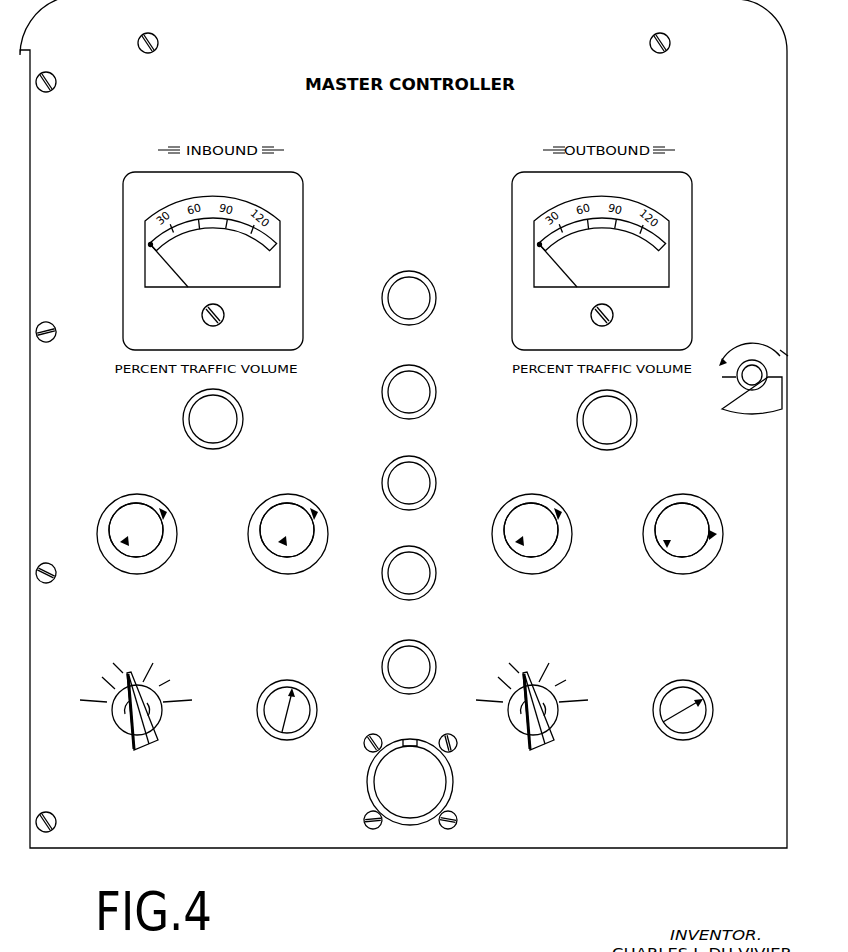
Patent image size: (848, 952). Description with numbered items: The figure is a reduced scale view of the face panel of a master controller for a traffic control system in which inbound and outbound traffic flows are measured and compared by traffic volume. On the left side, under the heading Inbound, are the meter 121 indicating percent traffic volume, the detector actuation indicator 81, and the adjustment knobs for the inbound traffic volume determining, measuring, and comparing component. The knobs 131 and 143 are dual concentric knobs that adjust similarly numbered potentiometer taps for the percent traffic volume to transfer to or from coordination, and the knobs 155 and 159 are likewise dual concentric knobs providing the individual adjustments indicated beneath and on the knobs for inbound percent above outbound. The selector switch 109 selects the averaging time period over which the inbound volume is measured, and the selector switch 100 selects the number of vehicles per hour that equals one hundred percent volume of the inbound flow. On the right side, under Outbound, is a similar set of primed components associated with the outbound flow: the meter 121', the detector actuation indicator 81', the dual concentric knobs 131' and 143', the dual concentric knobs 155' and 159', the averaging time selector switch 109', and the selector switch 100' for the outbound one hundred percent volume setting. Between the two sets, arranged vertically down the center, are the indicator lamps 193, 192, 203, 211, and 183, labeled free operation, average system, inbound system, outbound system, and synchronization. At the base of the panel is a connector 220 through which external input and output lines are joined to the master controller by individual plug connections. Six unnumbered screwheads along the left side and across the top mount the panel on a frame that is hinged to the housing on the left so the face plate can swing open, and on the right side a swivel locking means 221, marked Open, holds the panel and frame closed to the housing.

The meter 121 is at (188, 261).
The meter 121' is at (623, 261).
The indicator lamp 193 is at (383, 311).
The indicator lamp 192 is at (382, 400).
The indicator lamp 203 is at (383, 478).
The indicator lamp 211 is at (383, 562).
The indicator lamp 183 is at (436, 681).
The connector 220 is at (453, 778).
The detector actuation indicator 81 is at (206, 427).
The detector actuation indicator 81' is at (608, 427).
The knob 131 is at (135, 552).
The knob 143 is at (110, 534).
The knob 155 is at (290, 546).
The knob 159 is at (264, 533).
The knob 131' is at (532, 552).
The knob 143' is at (505, 530).
The knob 155' is at (688, 559).
The knob 159' is at (667, 514).
The selector switch 109 is at (132, 719).
The selector switch 109' is at (530, 719).
The selector switch 100 is at (285, 733).
The selector switch 100' is at (678, 733).
The swivel locking means 221 is at (742, 388).